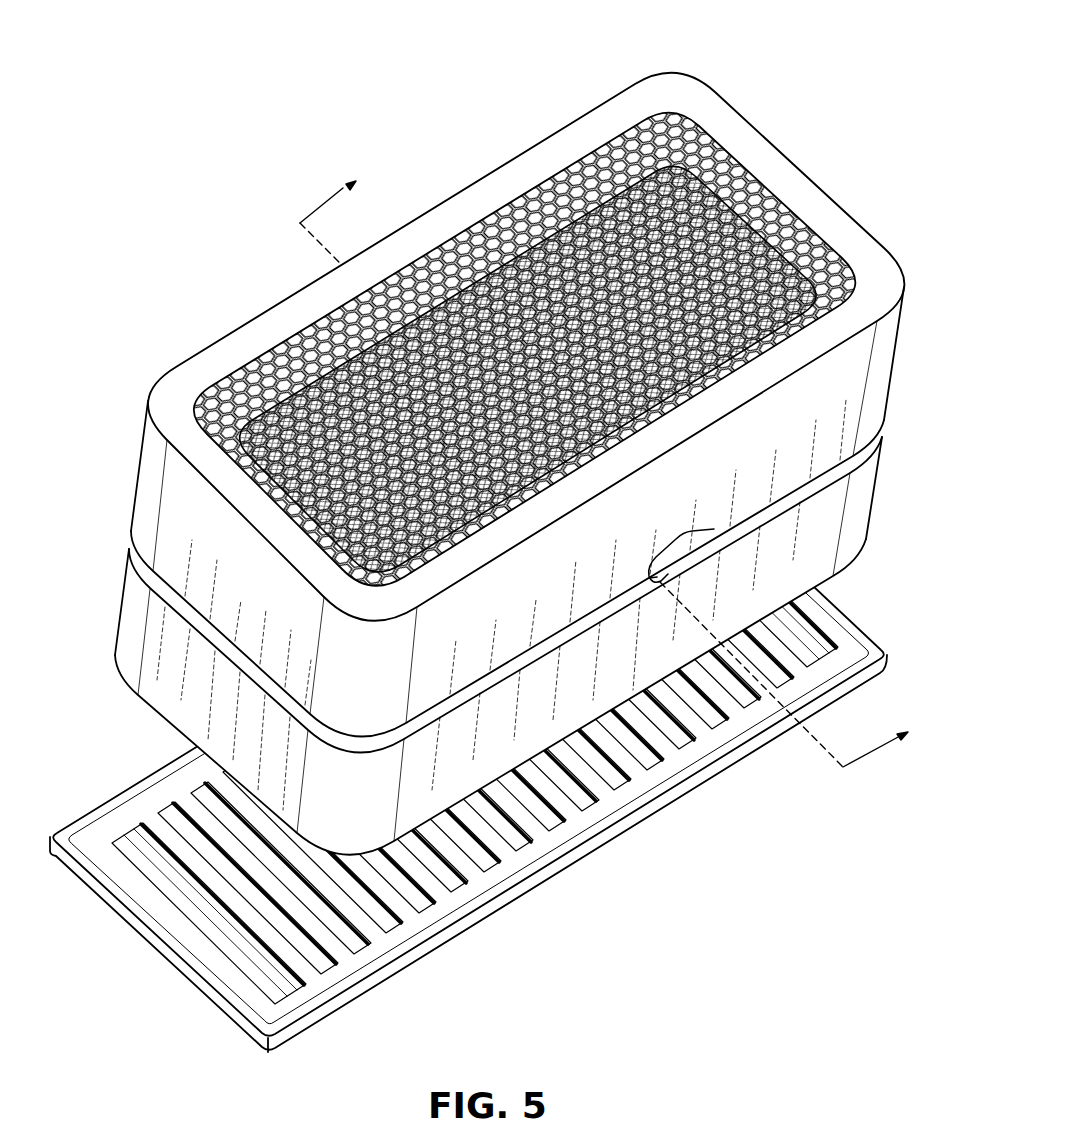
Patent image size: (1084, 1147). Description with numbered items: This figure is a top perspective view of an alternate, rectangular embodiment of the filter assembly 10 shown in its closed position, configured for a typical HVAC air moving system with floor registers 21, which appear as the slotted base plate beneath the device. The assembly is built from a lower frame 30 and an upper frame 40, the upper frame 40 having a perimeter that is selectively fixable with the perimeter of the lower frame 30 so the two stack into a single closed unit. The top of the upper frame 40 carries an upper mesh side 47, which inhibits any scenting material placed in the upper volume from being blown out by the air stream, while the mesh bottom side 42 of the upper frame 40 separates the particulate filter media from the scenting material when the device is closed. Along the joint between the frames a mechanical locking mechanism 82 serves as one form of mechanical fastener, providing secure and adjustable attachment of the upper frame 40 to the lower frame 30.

The filter assembly 10 is at (722, 33).
The floor registers 21 is at (213, 915).
The lower frame 30 is at (197, 703).
The upper frame 40 is at (834, 193).
The mesh bottom side 42 is at (518, 198).
The upper mesh side 47 is at (612, 143).
The mechanical locking mechanism 82 is at (680, 552).